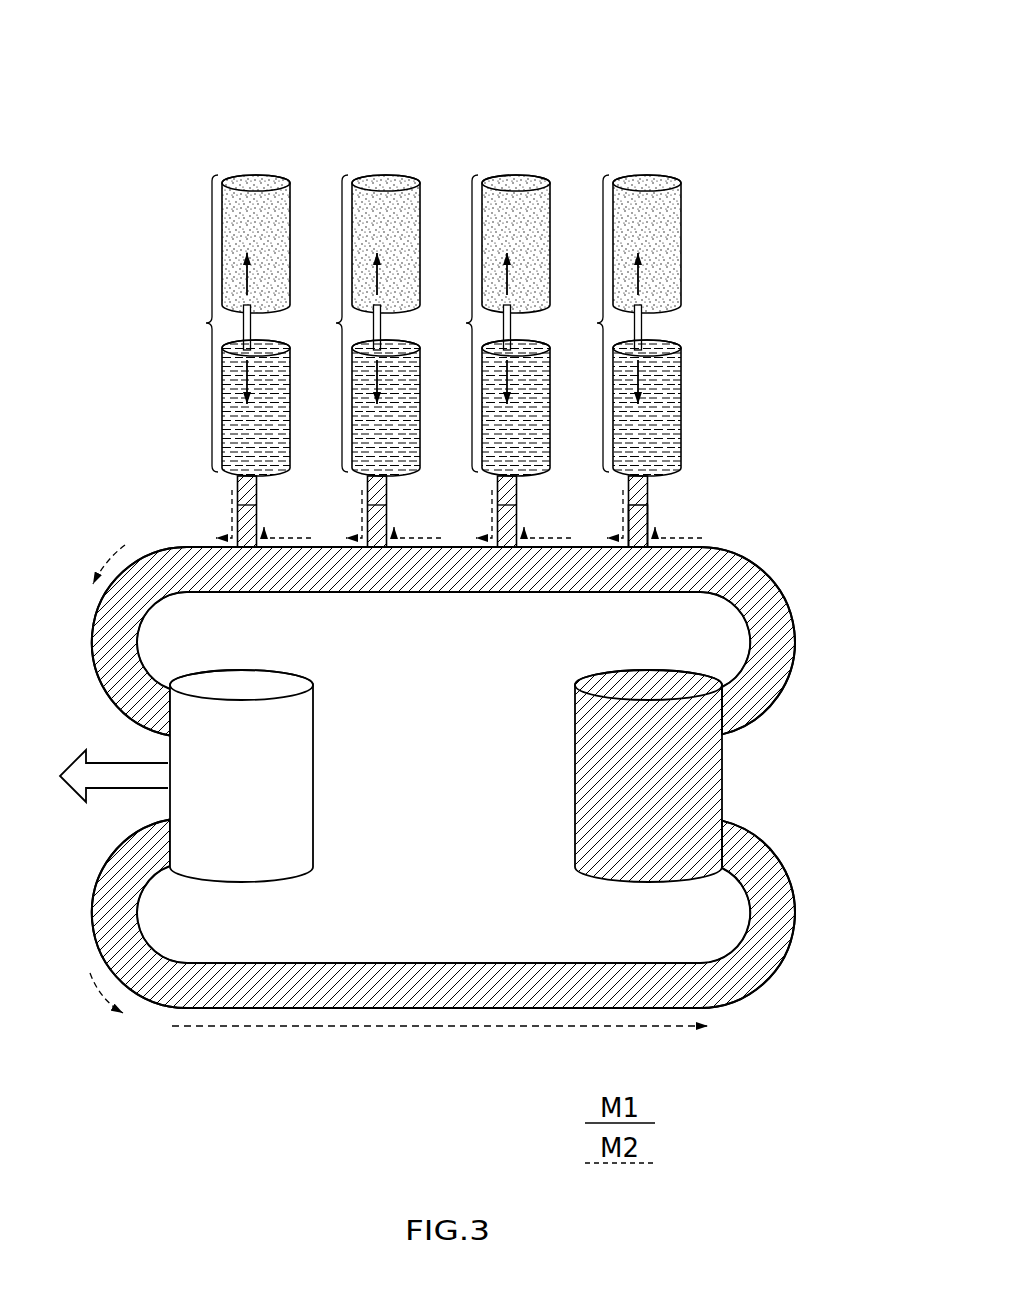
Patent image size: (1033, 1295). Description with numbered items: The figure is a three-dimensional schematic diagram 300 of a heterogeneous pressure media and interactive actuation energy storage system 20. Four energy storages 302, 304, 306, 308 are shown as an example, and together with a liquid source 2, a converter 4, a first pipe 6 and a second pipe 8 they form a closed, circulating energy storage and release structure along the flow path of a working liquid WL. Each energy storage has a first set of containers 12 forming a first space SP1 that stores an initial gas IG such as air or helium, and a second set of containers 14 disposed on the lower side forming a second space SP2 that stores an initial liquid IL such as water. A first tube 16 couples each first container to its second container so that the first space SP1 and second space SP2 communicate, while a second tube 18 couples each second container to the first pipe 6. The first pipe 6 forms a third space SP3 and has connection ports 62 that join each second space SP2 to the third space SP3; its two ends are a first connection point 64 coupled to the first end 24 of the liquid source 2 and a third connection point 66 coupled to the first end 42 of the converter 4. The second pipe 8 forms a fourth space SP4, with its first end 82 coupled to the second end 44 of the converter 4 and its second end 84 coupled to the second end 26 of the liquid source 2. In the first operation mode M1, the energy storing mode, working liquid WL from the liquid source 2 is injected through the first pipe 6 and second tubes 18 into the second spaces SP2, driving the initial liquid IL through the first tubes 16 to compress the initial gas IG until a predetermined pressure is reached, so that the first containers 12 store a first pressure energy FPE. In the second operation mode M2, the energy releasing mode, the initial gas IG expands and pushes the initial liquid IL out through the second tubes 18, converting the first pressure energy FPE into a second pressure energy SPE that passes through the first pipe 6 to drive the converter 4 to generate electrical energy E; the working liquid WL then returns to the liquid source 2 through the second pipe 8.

The three-dimensional schematic diagram 300 is at (832, 41).
The heterogeneous pressure media and interactive actuation energy storage system 20 is at (103, 100).
The energy storage 302 is at (208, 361).
The energy storage 304 is at (360, 361).
The energy storage 306 is at (490, 361).
The energy storage 308 is at (659, 348).
The first set of spaces SP1 is at (696, 231).
The initial gas IG is at (672, 250).
The first set of containers 12 is at (688, 244).
The first set of tubes 16 is at (642, 322).
The second space SP2 is at (696, 397).
The initial liquid IL is at (672, 413).
The second set of containers 14 is at (688, 408).
The second set of tubes 18 is at (679, 506).
The connection ports 62 is at (648, 521).
The first connection point 64 is at (745, 540).
The third connection point 66 is at (147, 544).
The first operation mode M1 is at (766, 549).
The first end of the converter 42 is at (175, 600).
The third space SP3 is at (443, 641).
The first pipe 6 is at (472, 593).
The first end of the liquid source 24 is at (716, 599).
The converter 4 is at (313, 756).
The liquid source 2 is at (694, 776).
The working liquid WL is at (712, 800).
The electrical energy E is at (102, 776).
The second end of the converter 44 is at (174, 956).
The second pipe 8 is at (472, 961).
The second end of the liquid source 26 is at (716, 956).
The first end of the second pipe 82 is at (148, 1008).
The second end of the second pipe 84 is at (744, 1009).
The second operation mode M2 is at (797, 971).
The fourth space SP4 is at (443, 948).
The first pressure energy FPE is at (245, 279).
The second pressure energy SPE is at (245, 381).